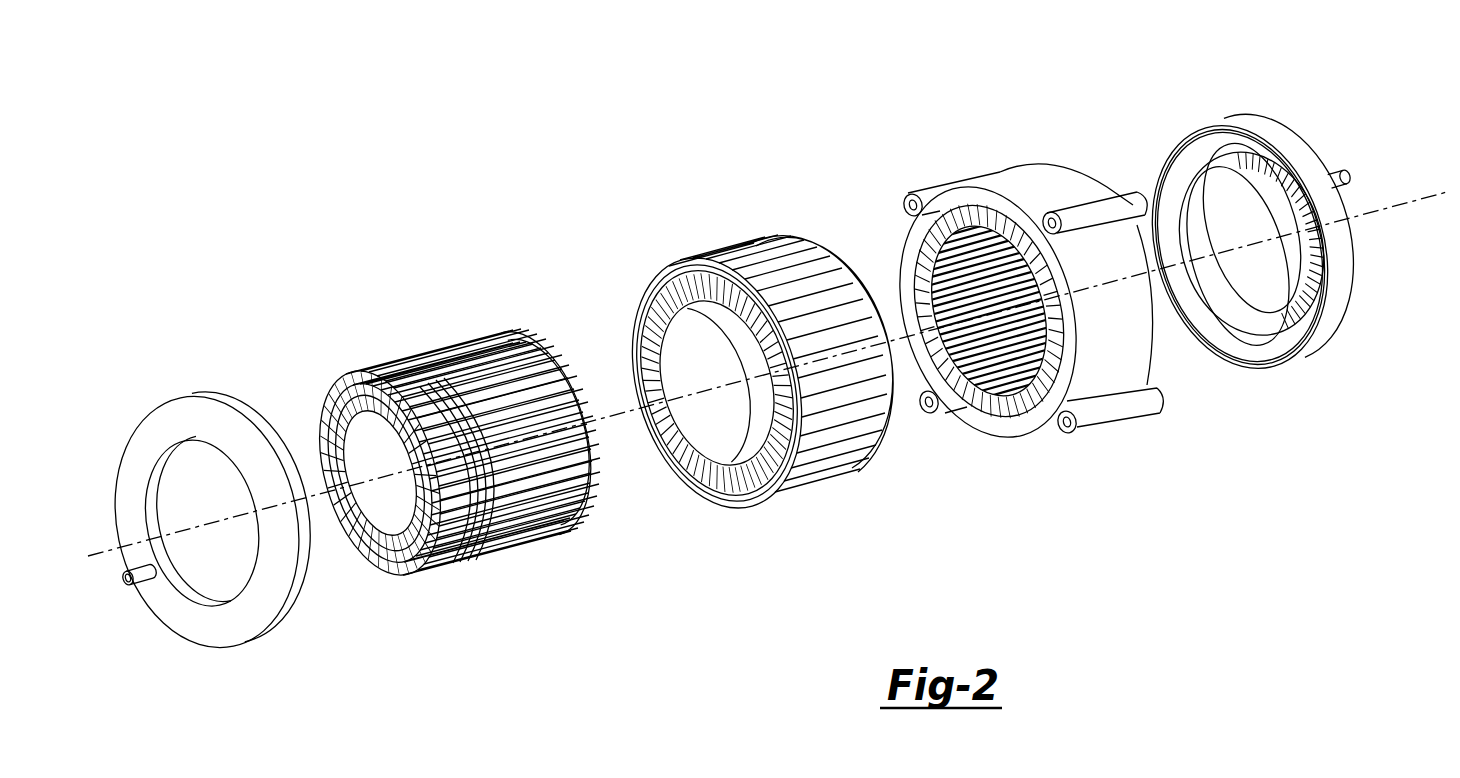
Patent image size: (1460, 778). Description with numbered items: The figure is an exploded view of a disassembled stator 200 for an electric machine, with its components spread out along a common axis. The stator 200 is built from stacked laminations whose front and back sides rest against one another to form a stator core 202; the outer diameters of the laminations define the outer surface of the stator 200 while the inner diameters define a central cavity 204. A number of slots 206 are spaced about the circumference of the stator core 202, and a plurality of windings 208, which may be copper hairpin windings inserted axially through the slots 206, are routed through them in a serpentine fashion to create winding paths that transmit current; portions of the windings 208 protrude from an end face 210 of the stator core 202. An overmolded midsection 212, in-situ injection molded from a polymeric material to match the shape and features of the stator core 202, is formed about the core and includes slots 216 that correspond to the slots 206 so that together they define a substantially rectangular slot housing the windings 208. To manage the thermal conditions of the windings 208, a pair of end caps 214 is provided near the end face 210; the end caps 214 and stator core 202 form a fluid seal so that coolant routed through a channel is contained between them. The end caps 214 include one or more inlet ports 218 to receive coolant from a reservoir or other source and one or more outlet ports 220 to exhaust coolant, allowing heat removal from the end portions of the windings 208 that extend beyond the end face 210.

The stator 200 is at (384, 192).
The stator core 202 is at (1051, 306).
The cavity 204 is at (988, 375).
The slots 206 is at (935, 243).
The windings 208 is at (518, 591).
The end face 210 is at (958, 202).
The overmolded midsection 212 is at (771, 393).
The end caps 214 is at (285, 656).
The slots 216 is at (672, 294).
The inlet ports 218 is at (146, 585).
The outlet ports 220 is at (1352, 176).